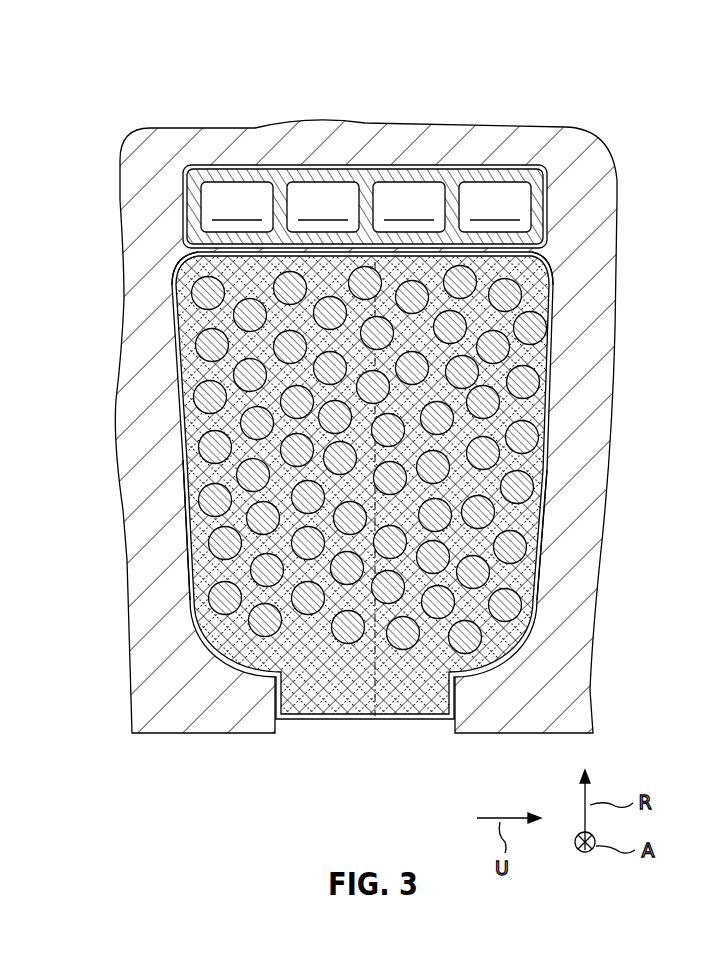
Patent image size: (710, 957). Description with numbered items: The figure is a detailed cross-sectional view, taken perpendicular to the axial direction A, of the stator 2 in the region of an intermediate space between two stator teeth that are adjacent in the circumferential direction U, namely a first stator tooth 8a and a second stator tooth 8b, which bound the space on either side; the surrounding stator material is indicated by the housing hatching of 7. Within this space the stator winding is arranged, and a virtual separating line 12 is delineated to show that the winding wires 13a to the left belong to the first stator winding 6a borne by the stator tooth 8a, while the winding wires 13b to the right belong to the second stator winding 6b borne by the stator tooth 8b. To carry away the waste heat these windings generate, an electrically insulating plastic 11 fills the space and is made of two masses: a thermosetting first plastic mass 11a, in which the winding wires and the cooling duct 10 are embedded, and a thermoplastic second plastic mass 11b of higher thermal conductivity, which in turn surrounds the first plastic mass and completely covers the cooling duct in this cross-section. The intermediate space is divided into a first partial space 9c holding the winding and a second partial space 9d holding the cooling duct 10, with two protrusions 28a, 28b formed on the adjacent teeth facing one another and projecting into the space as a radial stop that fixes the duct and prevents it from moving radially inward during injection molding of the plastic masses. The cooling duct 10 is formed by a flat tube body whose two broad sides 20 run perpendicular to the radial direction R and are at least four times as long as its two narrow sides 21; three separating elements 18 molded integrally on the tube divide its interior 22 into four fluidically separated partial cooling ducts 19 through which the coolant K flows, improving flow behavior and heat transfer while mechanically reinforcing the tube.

The stator 2 is at (648, 130).
The first stator winding 6a is at (180, 393).
The second stator winding 6b is at (555, 380).
The housing body 7 is at (161, 140).
The first stator tooth 8a is at (152, 513).
The second stator tooth 8b is at (573, 518).
The first partial space 9c is at (421, 516).
The second partial space 9d is at (240, 168).
The cooling duct 10 is at (504, 162).
The electrically insulating plastic 11 is at (553, 187).
The first plastic mass 11a is at (325, 720).
The second plastic mass 11b is at (543, 555).
The virtual separating line 12 is at (388, 722).
The winding wires 13a is at (175, 282).
The winding wires 13b is at (560, 318).
The separating element 18 is at (366, 157).
The partial cooling duct 19 is at (278, 181).
The broad side 20 is at (365, 140).
The narrow side 21 is at (181, 202).
The tube body interior 22 is at (402, 172).
The protrusion 28a is at (193, 252).
The protrusion 28b is at (540, 257).